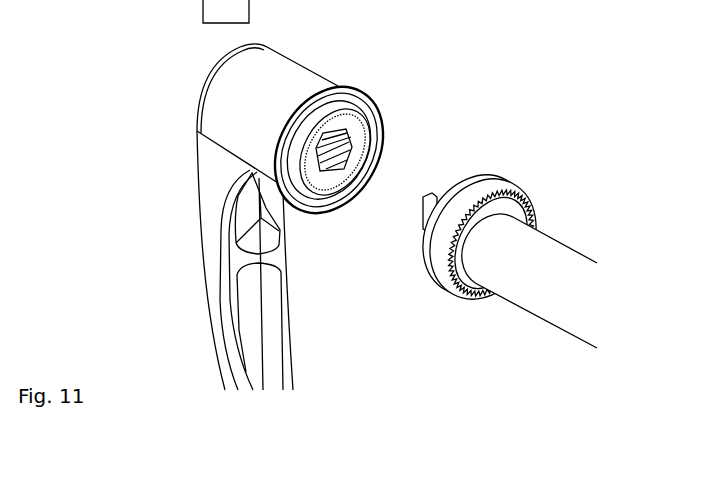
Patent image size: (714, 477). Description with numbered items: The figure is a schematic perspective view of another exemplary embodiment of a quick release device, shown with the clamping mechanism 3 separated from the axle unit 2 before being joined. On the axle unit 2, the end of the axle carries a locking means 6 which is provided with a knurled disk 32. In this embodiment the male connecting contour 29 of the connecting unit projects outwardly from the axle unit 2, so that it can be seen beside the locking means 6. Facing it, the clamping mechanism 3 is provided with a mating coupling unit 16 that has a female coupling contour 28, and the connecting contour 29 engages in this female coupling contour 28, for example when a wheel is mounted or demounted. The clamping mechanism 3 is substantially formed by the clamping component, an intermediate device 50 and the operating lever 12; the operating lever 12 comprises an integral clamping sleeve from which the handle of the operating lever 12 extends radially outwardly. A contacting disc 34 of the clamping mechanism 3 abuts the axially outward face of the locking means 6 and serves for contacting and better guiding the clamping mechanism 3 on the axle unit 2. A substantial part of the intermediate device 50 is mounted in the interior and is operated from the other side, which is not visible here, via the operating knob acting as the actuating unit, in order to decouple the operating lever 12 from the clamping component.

The axle unit 2 is at (596, 222).
The clamping mechanism 3 is at (198, 80).
The locking means 6 is at (488, 177).
The operating lever 12 is at (205, 272).
The coupling unit 16 is at (345, 160).
The female coupling contour 28 is at (343, 140).
The connecting contour 29 is at (435, 190).
The knurled disk 32 is at (522, 190).
The contacting disc 34 is at (352, 106).
The intermediate device 50 is at (281, 86).